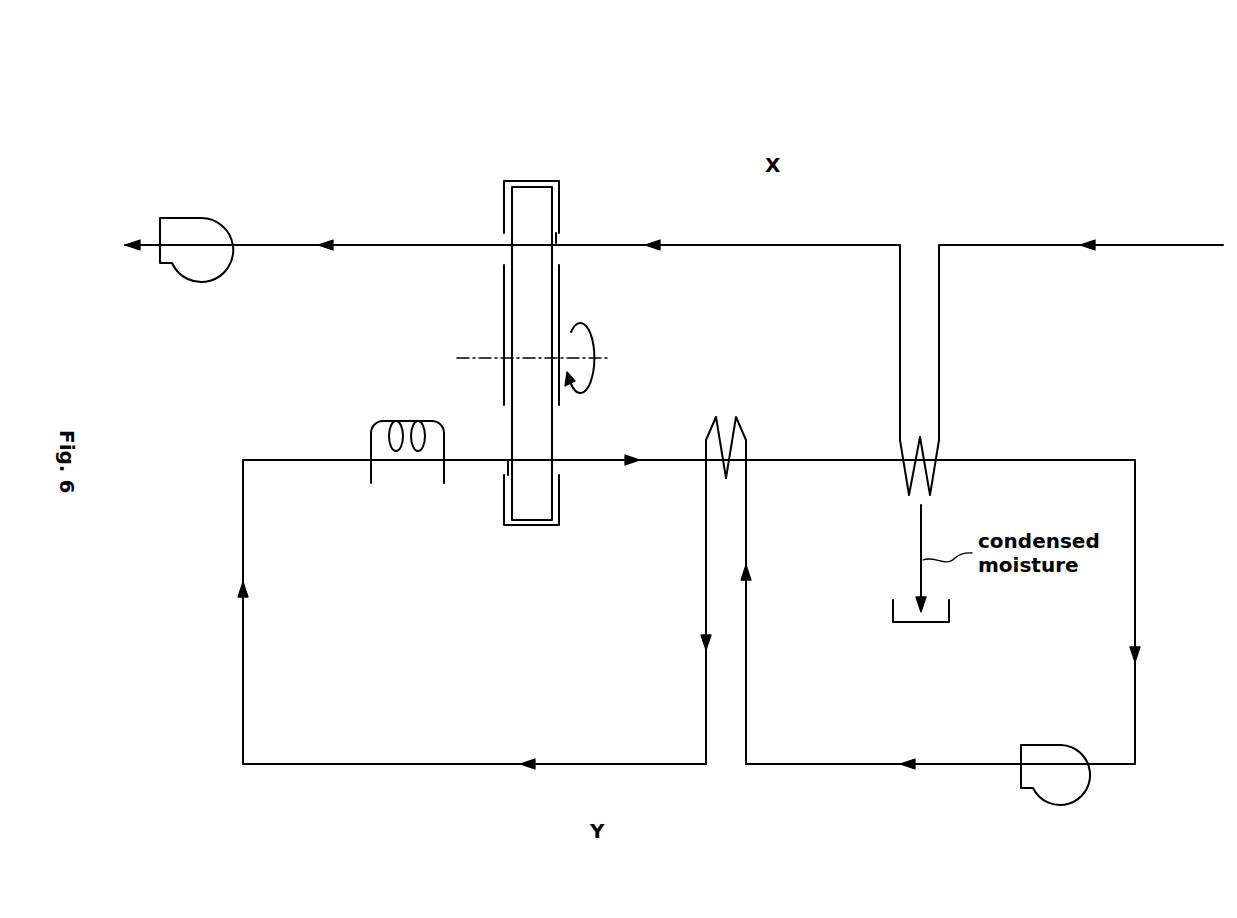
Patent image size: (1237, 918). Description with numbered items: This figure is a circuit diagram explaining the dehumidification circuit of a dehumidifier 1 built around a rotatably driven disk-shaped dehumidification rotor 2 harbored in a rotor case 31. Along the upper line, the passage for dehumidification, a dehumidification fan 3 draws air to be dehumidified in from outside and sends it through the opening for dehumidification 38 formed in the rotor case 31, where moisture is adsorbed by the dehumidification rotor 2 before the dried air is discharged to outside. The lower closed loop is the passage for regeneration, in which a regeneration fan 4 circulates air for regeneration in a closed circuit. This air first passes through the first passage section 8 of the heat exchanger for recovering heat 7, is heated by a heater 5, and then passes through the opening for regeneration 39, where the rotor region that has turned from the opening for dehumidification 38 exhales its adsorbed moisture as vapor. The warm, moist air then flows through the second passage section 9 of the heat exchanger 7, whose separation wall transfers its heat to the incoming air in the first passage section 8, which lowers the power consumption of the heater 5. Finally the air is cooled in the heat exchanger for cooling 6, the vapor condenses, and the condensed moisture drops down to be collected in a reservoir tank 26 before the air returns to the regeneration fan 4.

The dehumidifier 1 is at (1116, 88).
The dehumidification rotor 2 is at (527, 187).
The dehumidification fan 3 is at (190, 218).
The regeneration fan 4 is at (1065, 804).
The heater 5 is at (362, 412).
The heat exchanger for cooling 6 is at (962, 448).
The heat exchanger for recovering heat 7 is at (692, 590).
The first passage section 8 is at (706, 440).
The second passage section 9 is at (726, 478).
The reservoir tank 26 is at (950, 612).
The rotor case 31 is at (560, 214).
The opening for dehumidification 38 is at (563, 236).
The opening for regeneration 39 is at (502, 470).